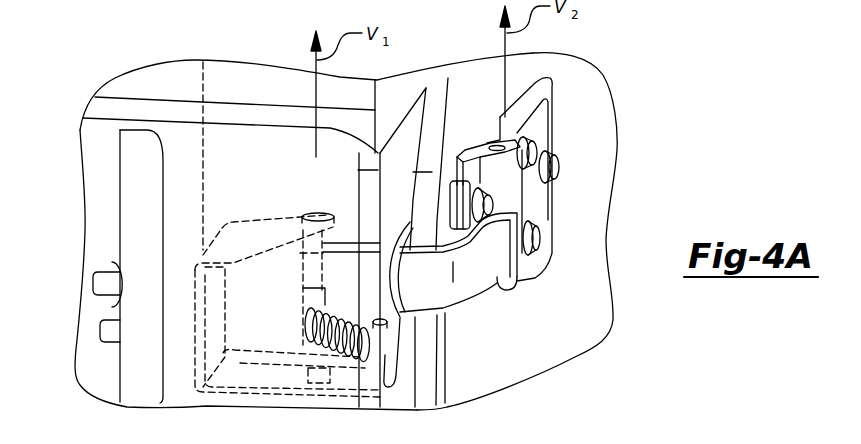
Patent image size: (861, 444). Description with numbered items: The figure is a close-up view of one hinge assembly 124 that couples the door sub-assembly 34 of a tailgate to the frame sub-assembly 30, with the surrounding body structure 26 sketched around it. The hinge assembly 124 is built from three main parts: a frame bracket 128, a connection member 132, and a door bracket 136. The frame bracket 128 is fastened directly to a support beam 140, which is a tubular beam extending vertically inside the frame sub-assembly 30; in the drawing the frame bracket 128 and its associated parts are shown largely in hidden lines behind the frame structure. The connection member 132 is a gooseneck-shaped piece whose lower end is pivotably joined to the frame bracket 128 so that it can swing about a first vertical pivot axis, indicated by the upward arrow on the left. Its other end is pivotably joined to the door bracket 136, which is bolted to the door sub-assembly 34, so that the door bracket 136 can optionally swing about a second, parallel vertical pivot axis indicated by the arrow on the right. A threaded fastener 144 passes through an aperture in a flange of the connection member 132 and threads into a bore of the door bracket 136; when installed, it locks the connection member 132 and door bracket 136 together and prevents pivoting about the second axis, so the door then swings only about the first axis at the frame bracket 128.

The vehicle body / door frame 26 is at (140, 108).
The frame sub-assembly 30 is at (107, 172).
The door sub-assembly 34 is at (560, 322).
The hinge assembly 124 is at (586, 128).
The frame bracket 128 is at (407, 362).
The connection member 132 is at (477, 263).
The door bracket 136 is at (540, 196).
The support beam 140 is at (147, 242).
The fastener 144 is at (493, 208).